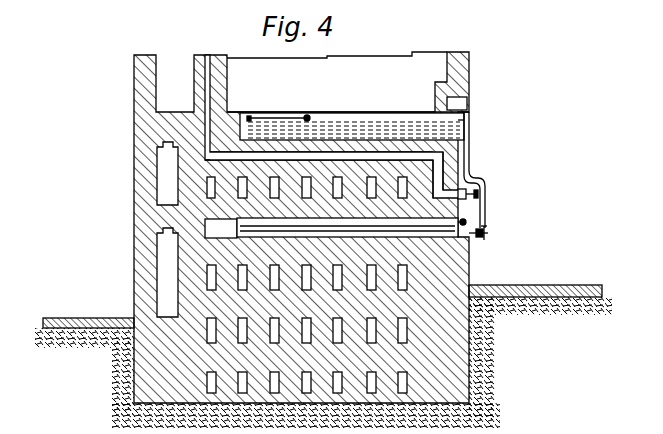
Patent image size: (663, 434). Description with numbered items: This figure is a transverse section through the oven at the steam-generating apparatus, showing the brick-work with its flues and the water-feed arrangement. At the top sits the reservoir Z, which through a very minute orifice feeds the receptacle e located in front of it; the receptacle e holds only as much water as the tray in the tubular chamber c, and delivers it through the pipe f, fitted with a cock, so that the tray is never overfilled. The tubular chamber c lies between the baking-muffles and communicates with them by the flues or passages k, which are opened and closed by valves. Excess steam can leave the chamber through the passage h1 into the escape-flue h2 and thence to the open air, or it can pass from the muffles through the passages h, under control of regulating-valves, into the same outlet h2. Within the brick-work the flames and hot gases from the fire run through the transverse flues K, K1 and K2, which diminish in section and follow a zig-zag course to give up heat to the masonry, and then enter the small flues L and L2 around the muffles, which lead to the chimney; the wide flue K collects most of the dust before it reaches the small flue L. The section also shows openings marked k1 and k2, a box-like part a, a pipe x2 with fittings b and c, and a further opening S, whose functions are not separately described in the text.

The passage h1 is at (333, 126).
The passage h is at (319, 160).
The escape-flue h2 is at (437, 175).
The reservoir Z is at (348, 126).
The receptacle e is at (460, 127).
The pipe f is at (478, 170).
The small flue L2 is at (167, 173).
The flue L is at (167, 272).
The flue k2 is at (318, 181).
The flue K2 is at (384, 180).
The flue k1 is at (317, 272).
The flue K1 is at (384, 268).
The flue or passage k is at (306, 330).
The wide flue K is at (386, 328).
The flue S is at (306, 382).
The box a is at (221, 228).
The pipe x2 is at (352, 213).
The valve b is at (445, 214).
The tubular chamber c is at (478, 238).